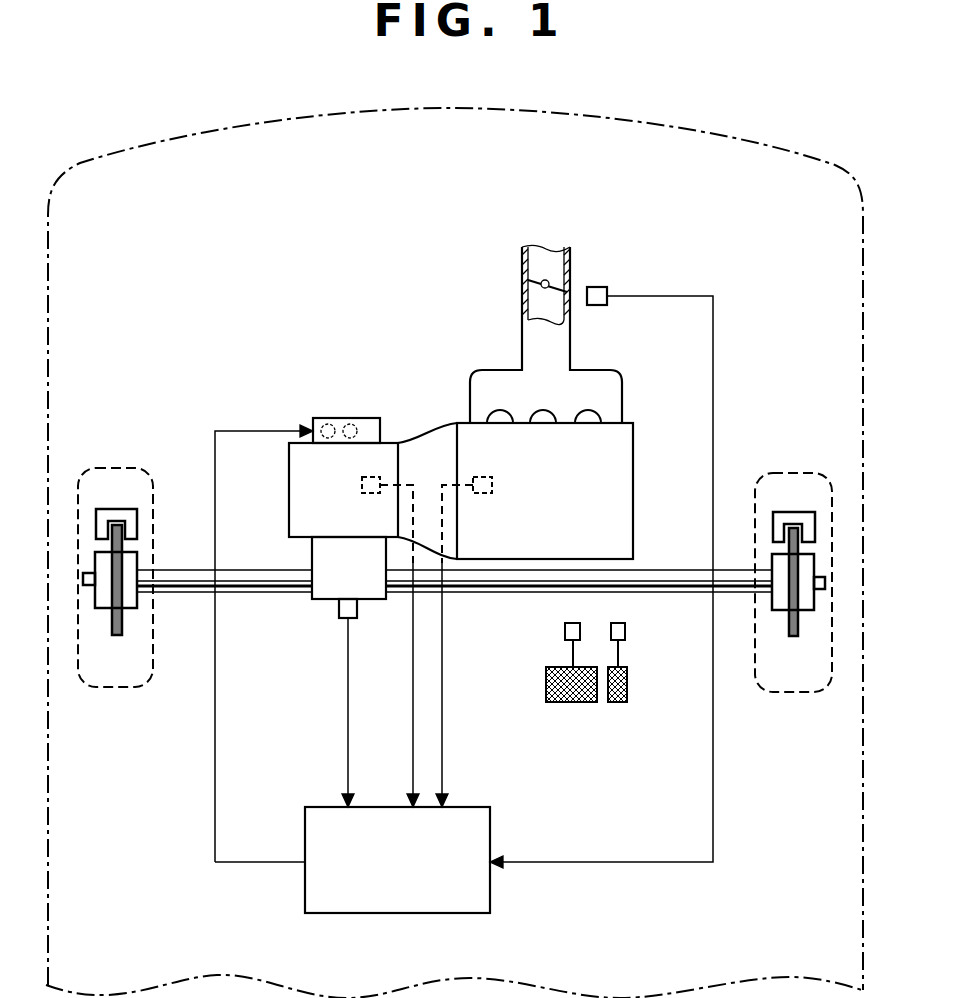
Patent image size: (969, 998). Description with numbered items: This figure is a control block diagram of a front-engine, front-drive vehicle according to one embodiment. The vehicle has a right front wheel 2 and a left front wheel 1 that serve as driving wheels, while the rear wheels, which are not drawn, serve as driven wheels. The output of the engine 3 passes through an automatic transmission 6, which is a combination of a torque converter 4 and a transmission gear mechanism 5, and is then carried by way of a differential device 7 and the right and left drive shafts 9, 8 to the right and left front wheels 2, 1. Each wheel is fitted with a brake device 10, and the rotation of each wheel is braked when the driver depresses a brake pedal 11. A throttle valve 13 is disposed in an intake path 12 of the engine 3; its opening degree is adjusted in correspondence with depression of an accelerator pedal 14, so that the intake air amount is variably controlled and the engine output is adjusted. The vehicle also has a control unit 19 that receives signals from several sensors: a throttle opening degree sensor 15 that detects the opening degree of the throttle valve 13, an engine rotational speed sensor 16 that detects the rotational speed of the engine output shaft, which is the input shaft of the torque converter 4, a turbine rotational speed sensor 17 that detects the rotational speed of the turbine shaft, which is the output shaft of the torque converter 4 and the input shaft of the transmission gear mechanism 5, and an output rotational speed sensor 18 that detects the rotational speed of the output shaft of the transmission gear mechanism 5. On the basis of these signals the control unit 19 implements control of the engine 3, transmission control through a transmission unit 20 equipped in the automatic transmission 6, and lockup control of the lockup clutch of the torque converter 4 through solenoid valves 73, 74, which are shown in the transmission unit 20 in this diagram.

The left front wheel 1 is at (125, 470).
The right front wheel 2 is at (793, 477).
The engine 3 is at (633, 423).
The torque converter 4 is at (432, 425).
The transmission gear mechanism 5 is at (289, 482).
The automatic transmission 6 is at (408, 396).
The differential device 7 is at (328, 602).
The left drive shaft 8 is at (243, 595).
The right drive shaft 9 is at (498, 597).
The brake device 10 is at (110, 518).
The brake pedal 11 is at (573, 702).
The intake path 12 is at (508, 377).
The throttle valve 13 is at (540, 282).
The accelerator pedal 14 is at (620, 702).
The throttle opening degree sensor 15 is at (597, 287).
The engine rotational speed sensor 16 is at (492, 485).
The turbine rotational speed sensor 17 is at (362, 485).
The output rotational speed sensor 18 is at (357, 615).
The control unit 19 is at (490, 900).
The transmission unit 20 is at (355, 420).
The solenoid valve 73 is at (323, 425).
The solenoid valve 74 is at (347, 424).